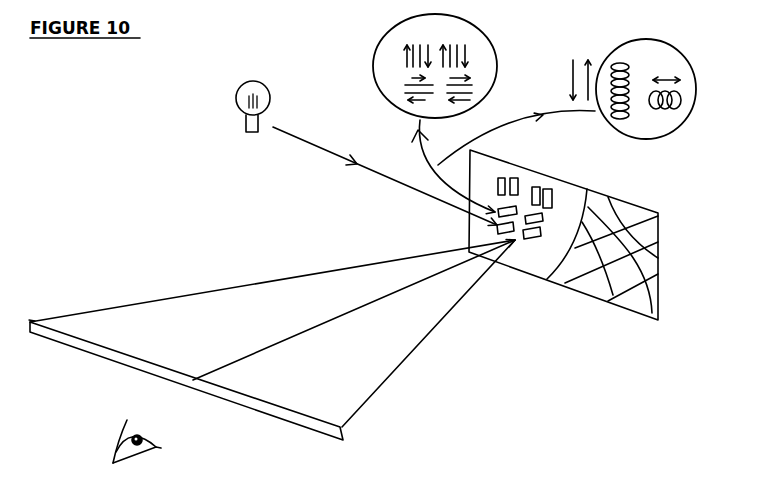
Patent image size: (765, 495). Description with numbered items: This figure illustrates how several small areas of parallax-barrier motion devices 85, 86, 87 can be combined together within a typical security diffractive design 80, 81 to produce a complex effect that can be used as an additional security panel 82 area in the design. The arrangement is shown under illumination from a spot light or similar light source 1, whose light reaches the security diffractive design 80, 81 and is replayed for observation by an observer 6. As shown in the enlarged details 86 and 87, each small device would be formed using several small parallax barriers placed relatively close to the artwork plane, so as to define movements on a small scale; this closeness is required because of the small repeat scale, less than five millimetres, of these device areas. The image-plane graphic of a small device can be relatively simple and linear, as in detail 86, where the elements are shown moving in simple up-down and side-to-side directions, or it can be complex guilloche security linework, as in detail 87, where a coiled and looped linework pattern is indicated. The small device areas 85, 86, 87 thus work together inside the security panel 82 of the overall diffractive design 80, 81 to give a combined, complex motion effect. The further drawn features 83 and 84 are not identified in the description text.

The light source 1 is at (270, 106).
The observer 6 is at (138, 451).
The security diffractive design 80 is at (560, 179).
The security diffractive design 81 is at (640, 300).
The security panel area 82 is at (514, 180).
The enlarged view of pixel element motions 83 is at (450, 63).
The display screen 84 is at (186, 383).
The small area device 85 is at (458, 40).
The detail of small device with simple linear graphic 86 is at (478, 90).
The detail of small device with guilloche security linework 87 is at (684, 57).